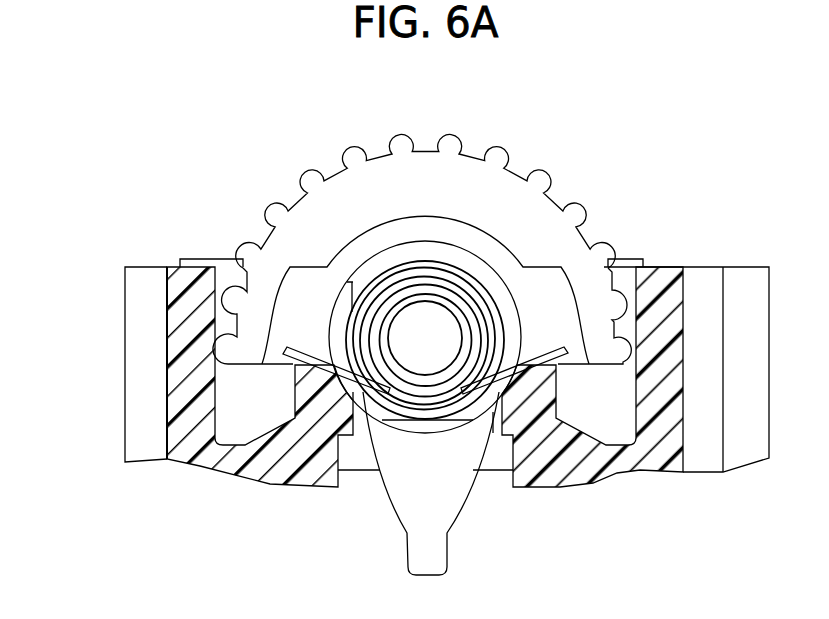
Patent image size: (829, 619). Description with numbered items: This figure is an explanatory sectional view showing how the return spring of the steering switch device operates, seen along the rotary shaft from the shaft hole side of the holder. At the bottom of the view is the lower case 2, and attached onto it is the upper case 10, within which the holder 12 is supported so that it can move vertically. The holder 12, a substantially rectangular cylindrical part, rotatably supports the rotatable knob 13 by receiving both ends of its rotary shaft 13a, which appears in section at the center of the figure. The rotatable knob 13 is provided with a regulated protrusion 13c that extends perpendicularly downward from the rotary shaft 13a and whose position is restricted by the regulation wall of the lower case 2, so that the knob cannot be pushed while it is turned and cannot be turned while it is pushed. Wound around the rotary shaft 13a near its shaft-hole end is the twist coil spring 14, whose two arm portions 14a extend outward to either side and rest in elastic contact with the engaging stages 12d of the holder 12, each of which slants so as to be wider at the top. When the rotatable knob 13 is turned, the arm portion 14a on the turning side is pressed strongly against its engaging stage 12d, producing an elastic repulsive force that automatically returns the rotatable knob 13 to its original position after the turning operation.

The lower case 2 is at (182, 406).
The upper case 10 is at (138, 361).
The holder 12 is at (193, 277).
The engaging stage 12d is at (298, 378).
The rotatable knob 13 is at (380, 168).
The rotary shaft 13a is at (418, 348).
The regulated protrusion 13c is at (433, 553).
The twist coil spring 14 is at (453, 275).
The arm portion 14a is at (300, 352).